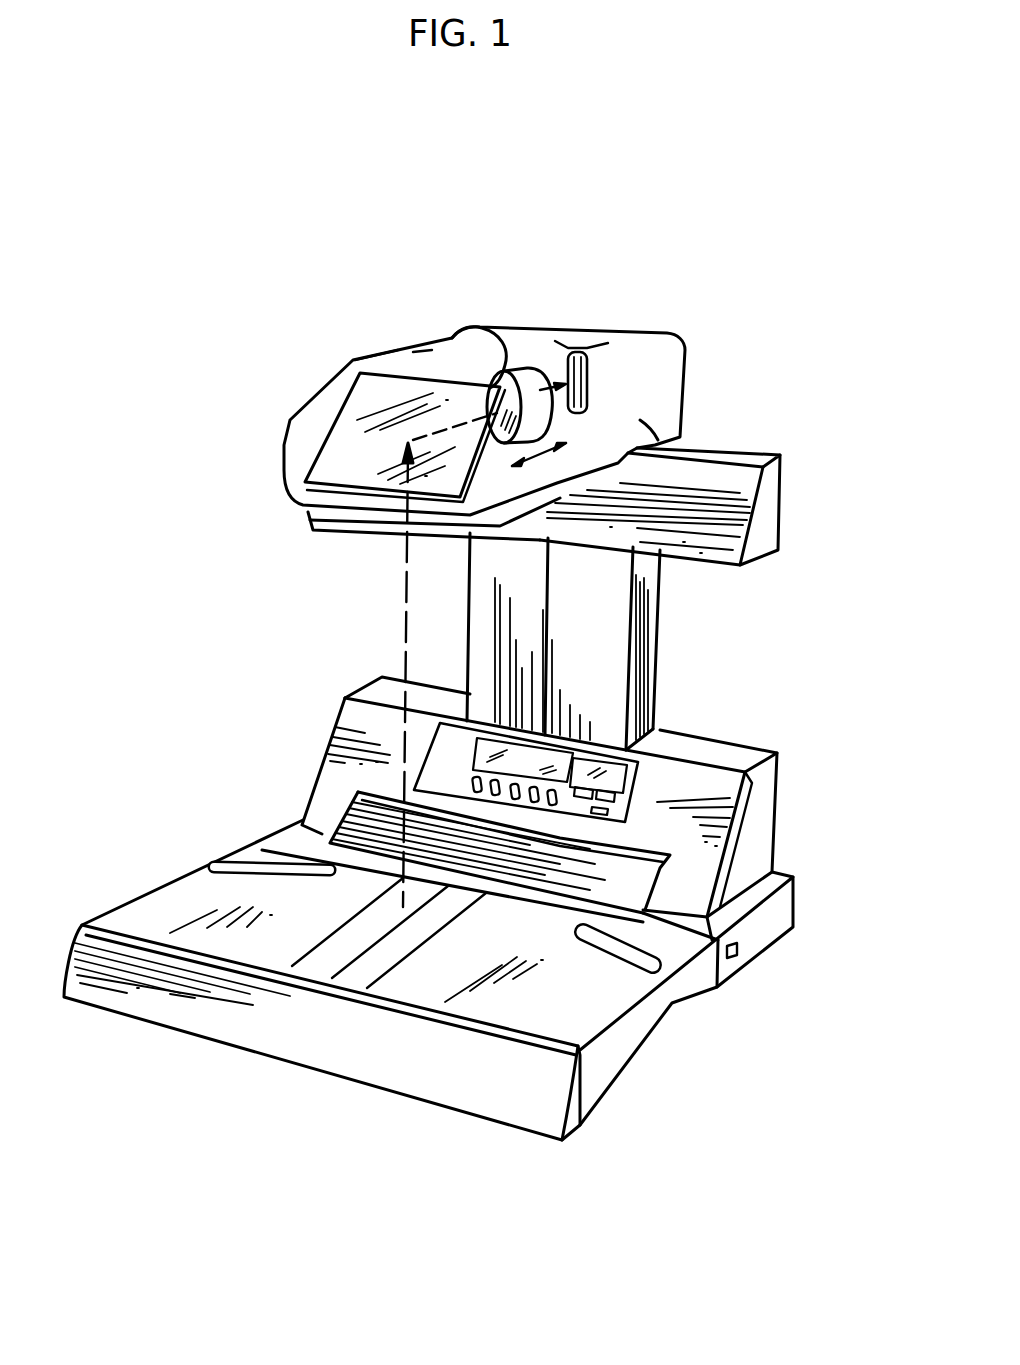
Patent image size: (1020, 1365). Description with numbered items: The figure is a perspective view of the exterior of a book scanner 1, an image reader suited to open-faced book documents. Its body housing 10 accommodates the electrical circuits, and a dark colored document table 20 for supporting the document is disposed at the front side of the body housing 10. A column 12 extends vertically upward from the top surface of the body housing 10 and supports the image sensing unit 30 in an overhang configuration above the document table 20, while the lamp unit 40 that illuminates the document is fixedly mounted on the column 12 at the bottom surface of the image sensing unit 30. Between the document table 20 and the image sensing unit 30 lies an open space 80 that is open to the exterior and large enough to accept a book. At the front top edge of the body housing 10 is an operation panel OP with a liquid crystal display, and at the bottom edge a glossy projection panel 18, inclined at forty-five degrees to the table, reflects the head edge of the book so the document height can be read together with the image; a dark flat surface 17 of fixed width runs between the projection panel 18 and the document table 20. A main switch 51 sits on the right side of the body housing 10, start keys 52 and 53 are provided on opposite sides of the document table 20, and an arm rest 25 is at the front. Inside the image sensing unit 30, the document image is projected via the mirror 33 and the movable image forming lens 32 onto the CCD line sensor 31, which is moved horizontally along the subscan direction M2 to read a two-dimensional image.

The book scanner 1 is at (202, 178).
The body housing 10 is at (765, 770).
The column 12 is at (650, 612).
The flat surface 17 is at (363, 852).
The projection panel 18 is at (357, 797).
The document table 20 is at (573, 1012).
The arm rest 25 is at (272, 996).
The image sensing unit 30 is at (325, 382).
The line sensor 31 is at (588, 376).
The image forming lens 32 is at (455, 338).
The mirror 33 is at (349, 427).
The lamp unit 40 is at (770, 498).
The main switch 51 is at (740, 949).
The start key 52 is at (247, 857).
The start key 53 is at (643, 950).
The open space 80 is at (381, 621).
The operation panel OP is at (638, 786).
The subscan direction M2 is at (582, 345).